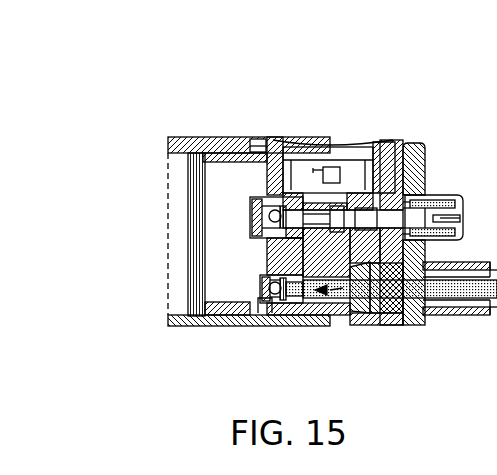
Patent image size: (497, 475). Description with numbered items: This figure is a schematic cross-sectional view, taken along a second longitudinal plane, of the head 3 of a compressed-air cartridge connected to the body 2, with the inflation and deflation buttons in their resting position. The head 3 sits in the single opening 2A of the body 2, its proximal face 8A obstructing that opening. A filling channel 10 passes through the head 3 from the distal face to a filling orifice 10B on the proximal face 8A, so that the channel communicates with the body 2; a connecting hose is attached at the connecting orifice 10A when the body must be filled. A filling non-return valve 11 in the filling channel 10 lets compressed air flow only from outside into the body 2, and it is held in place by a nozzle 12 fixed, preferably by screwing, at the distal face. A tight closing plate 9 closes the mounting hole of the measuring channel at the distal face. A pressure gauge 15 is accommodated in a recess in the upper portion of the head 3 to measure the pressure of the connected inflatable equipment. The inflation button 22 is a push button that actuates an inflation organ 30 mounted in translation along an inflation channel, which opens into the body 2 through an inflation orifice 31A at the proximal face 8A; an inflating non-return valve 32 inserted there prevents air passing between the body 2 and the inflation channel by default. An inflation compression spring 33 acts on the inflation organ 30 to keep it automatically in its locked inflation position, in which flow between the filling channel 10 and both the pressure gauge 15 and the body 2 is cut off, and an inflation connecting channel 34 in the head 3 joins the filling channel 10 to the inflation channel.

The body 2 is at (184, 137).
The single opening 2A is at (254, 136).
The head 3 is at (235, 308).
The proximal face 8A is at (268, 177).
The closing plate 9 is at (414, 143).
The filling channel 10 is at (348, 312).
The connecting orifice 10A is at (395, 325).
The filling orifice 10B is at (263, 310).
The filling non-return valve 11 is at (287, 313).
The nozzle 12 is at (412, 318).
The pressure gauge 15 is at (327, 146).
The inflation button 22 is at (456, 197).
The inflation organ 30 is at (396, 152).
The inflation orifice 31A is at (300, 238).
The inflating non-return valve 32 is at (252, 211).
The inflation compression spring 33 is at (427, 195).
The inflation connecting channel 34 is at (267, 252).